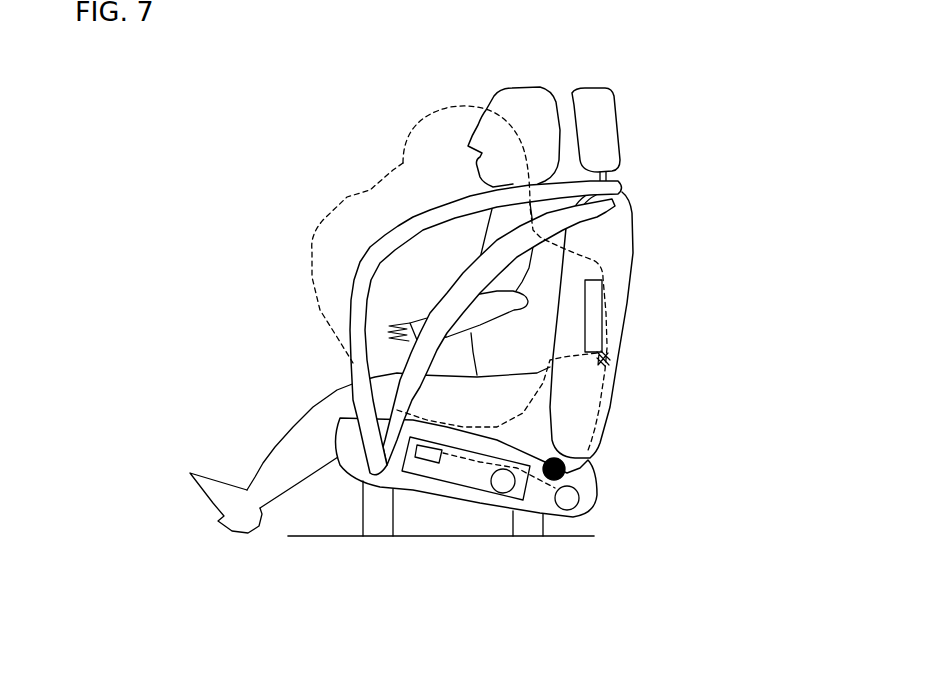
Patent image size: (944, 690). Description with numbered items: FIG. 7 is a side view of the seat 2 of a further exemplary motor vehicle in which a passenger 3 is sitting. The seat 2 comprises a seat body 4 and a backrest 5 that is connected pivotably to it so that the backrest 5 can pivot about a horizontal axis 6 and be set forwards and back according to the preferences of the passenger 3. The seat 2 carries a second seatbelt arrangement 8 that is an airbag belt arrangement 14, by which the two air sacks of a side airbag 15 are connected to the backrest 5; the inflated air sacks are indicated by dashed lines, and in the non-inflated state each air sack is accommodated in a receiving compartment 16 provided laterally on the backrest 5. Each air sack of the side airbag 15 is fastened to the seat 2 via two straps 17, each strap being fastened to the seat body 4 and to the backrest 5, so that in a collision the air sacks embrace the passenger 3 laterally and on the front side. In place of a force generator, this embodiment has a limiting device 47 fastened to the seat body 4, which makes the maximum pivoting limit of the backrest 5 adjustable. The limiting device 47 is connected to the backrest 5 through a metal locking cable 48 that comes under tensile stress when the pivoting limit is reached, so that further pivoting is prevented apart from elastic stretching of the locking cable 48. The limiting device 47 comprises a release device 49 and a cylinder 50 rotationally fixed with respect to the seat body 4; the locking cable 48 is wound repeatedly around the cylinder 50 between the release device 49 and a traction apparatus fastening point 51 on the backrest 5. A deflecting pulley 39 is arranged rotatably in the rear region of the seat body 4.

The seat 2 is at (554, 351).
The passenger 3 is at (527, 87).
The seat body 4 is at (440, 498).
The backrest 5 is at (633, 261).
The horizontal axis 6 is at (563, 474).
The second seatbelt arrangement 8 is at (672, 273).
The airbag belt arrangement 14 is at (672, 273).
The side airbag 15 is at (425, 94).
The receiving compartment 16 is at (595, 317).
The straps 17 is at (466, 280).
The deflecting pulley 39 is at (574, 508).
The limiting device 47 is at (420, 479).
The locking cable 48 is at (601, 407).
The release device 49 is at (421, 458).
The cylinder 50 is at (498, 494).
The traction apparatus fastening point 51 is at (601, 361).